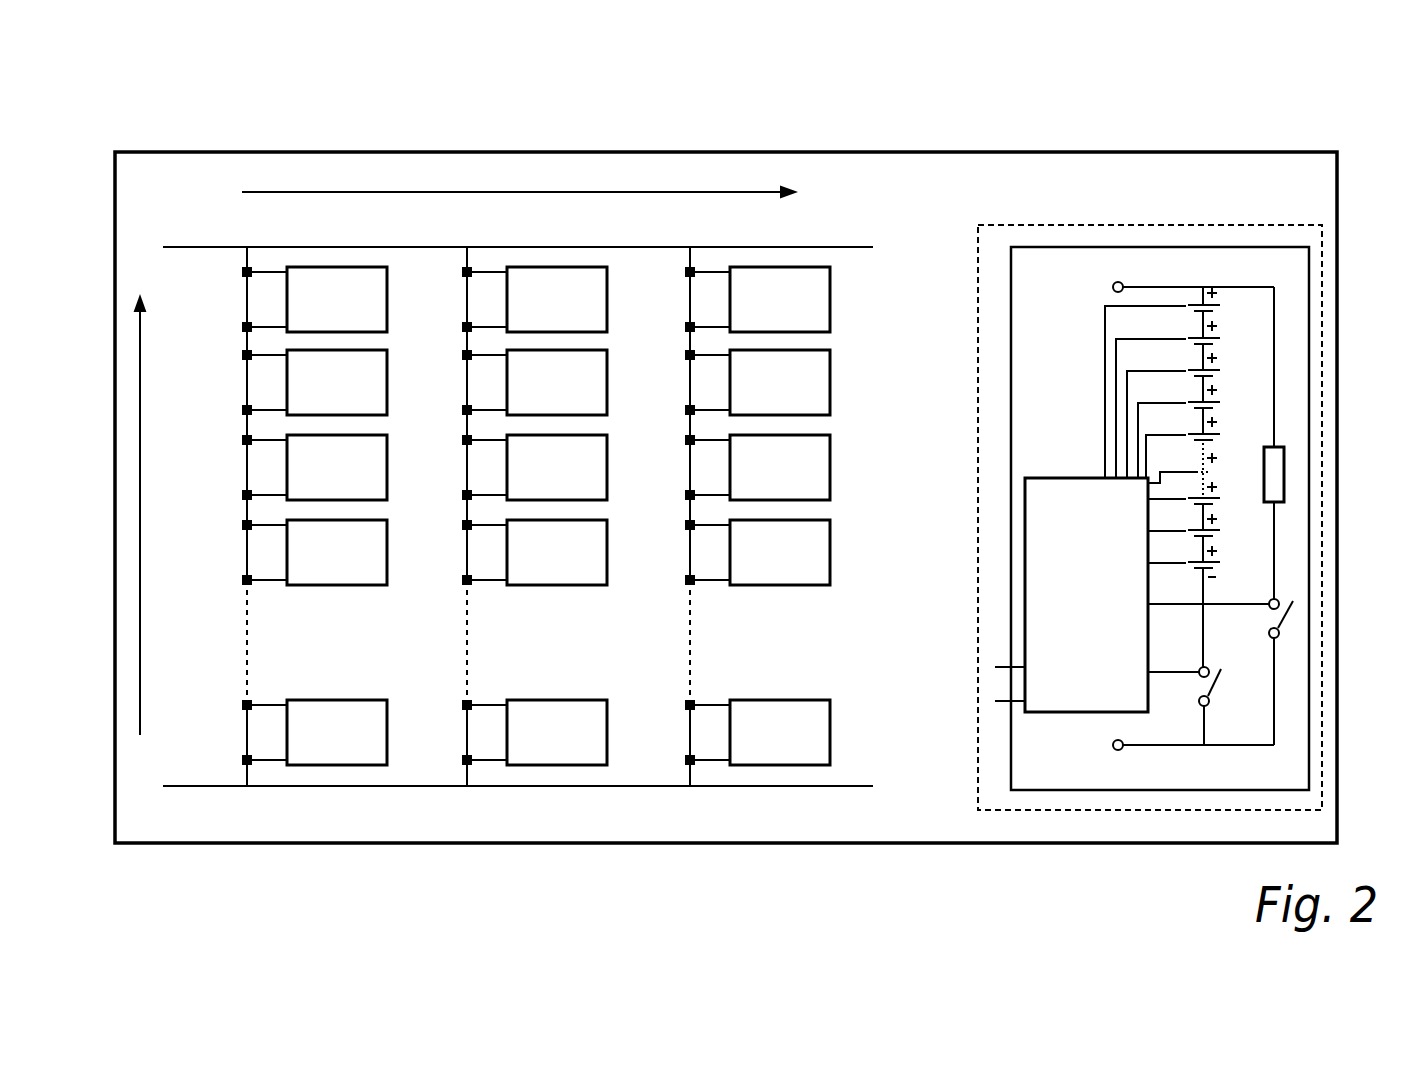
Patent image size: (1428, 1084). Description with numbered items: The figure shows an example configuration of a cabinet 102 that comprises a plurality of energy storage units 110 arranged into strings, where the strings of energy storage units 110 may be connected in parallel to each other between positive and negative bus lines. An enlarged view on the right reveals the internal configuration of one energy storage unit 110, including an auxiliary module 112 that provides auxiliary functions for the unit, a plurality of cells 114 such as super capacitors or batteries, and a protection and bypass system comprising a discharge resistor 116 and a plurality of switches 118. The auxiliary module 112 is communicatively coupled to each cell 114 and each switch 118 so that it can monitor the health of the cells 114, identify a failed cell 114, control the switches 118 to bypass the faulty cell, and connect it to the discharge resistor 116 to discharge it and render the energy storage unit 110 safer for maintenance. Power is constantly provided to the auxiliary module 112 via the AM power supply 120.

The cabinet 102 is at (164, 118).
The energy storage unit 110 is at (536, 516).
The auxiliary module 112 is at (1086, 595).
The cell 114 is at (1252, 366).
The discharge resistor 116 is at (1284, 477).
The switch 118 is at (1280, 633).
The AM power supply 120 is at (990, 687).